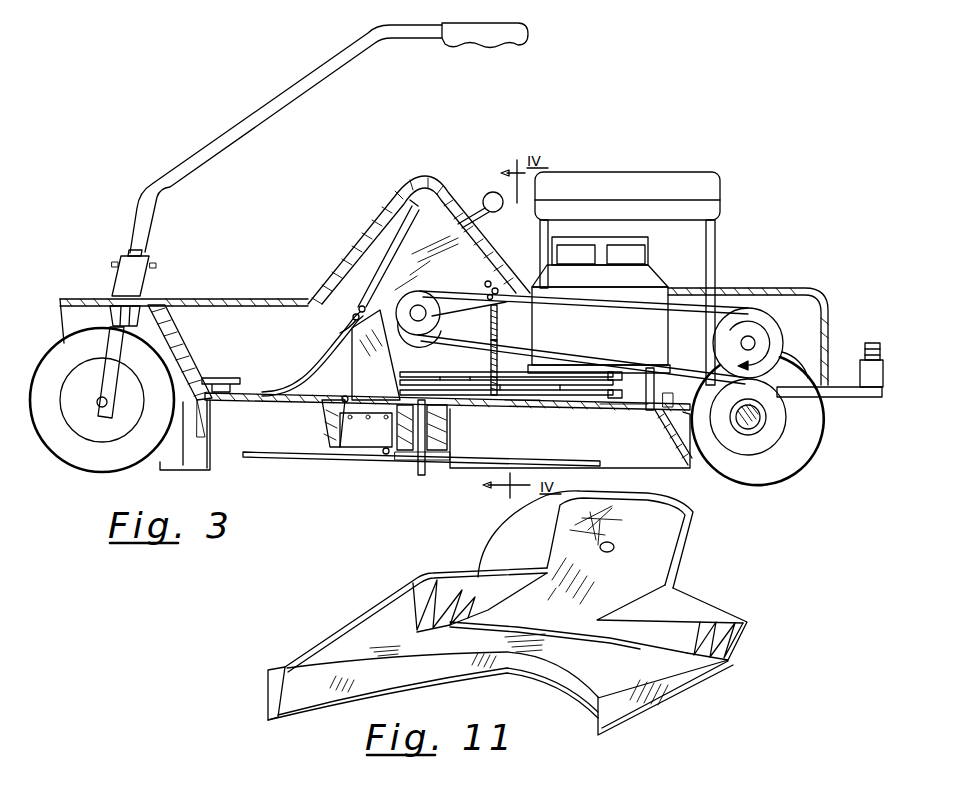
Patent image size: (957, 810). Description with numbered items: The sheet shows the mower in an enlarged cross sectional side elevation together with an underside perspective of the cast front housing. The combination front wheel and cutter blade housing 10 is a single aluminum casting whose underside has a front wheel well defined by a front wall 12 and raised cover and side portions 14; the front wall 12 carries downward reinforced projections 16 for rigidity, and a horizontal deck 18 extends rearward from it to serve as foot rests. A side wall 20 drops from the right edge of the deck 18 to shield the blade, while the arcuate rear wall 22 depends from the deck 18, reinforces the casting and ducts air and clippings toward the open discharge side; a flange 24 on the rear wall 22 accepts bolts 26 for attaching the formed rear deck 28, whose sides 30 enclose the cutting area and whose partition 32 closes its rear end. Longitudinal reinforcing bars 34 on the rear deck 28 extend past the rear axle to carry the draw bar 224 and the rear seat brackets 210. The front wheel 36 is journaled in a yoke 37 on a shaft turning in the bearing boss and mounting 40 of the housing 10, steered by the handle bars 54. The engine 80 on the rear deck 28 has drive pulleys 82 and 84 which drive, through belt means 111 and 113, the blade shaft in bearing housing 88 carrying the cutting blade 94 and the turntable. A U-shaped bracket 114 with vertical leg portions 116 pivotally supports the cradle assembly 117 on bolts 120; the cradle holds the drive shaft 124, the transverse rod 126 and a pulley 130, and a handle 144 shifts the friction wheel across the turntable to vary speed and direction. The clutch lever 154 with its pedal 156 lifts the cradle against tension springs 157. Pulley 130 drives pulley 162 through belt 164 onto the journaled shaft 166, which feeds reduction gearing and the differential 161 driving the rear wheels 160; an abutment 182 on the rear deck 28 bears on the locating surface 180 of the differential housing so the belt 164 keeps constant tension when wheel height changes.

In FIG. 11, the front wheel and cutter blade housing 10 is at (341, 586).
In FIG. 3, the front wall 12 is at (212, 406).
In FIG. 11, the front wall 12 is at (578, 634).
In FIG. 3, the raised cover and side portions 14 is at (86, 299).
In FIG. 11, the raised cover and side portions 14 is at (500, 540).
In FIG. 3, the reinforced projections 16 is at (188, 450).
In FIG. 11, the reinforced projections 16 is at (408, 627).
In FIG. 3, the horizontal deck 18 is at (270, 402).
In FIG. 11, the horizontal deck 18 is at (336, 642).
In FIG. 11, the side wall 20 is at (684, 684).
In FIG. 3, the rear wall 22 is at (322, 426).
In FIG. 11, the rear wall 22 is at (406, 670).
In FIG. 3, the flange 24 is at (366, 430).
In FIG. 3, the bolts 26 is at (345, 396).
In FIG. 3, the rear deck 28 is at (542, 406).
In FIG. 3, the sides 30 is at (648, 462).
In FIG. 3, the partition 32 is at (658, 432).
In FIG. 3, the longitudinal reinforcing bars 34 is at (616, 406).
In FIG. 3, the front wheel 36 is at (66, 462).
In FIG. 3, the yoke 37 is at (110, 347).
In FIG. 3, the bearing boss and mounting 40 is at (149, 274).
In FIG. 3, the handle bars 54 is at (294, 104).
In FIG. 3, the internal combustion engine 80 is at (662, 270).
In FIG. 3, the drive pulley 82 is at (629, 395).
In FIG. 3, the drive pulley 84 is at (629, 378).
In FIG. 3, the bearing housing 88 is at (446, 438).
In FIG. 3, the cutting blade 94 is at (326, 460).
In FIG. 3, the belt means 111 is at (522, 400).
In FIG. 3, the belt means 113 is at (518, 364).
In FIG. 3, the U-shaped bracket 114 is at (351, 336).
In FIG. 3, the vertical leg portions 116 is at (583, 352).
In FIG. 3, the cradle assembly 117 is at (472, 283).
In FIG. 3, the bolts 120 is at (356, 315).
In FIG. 3, the drive shaft 124 is at (563, 319).
In FIG. 3, the transverse rod 126 is at (498, 290).
In FIG. 3, the pulley 130 is at (469, 305).
In FIG. 3, the handle 144 is at (487, 200).
In FIG. 3, the clutch lever 154 is at (286, 374).
In FIG. 3, the pedal 156 is at (224, 376).
In FIG. 3, the tension springs 157 is at (504, 344).
In FIG. 3, the rear wheels 160 is at (788, 476).
In FIG. 3, the differential 161 is at (734, 450).
In FIG. 3, the pulley 162 is at (774, 326).
In FIG. 3, the belt 164 is at (678, 308).
In FIG. 3, the journaled shaft 166 is at (748, 344).
In FIG. 3, the locating surface 180 is at (700, 384).
In FIG. 3, the abutment 182 is at (732, 418).
In FIG. 3, the vertical support brackets 210 is at (549, 228).
In FIG. 3, the draw bar 224 is at (884, 382).